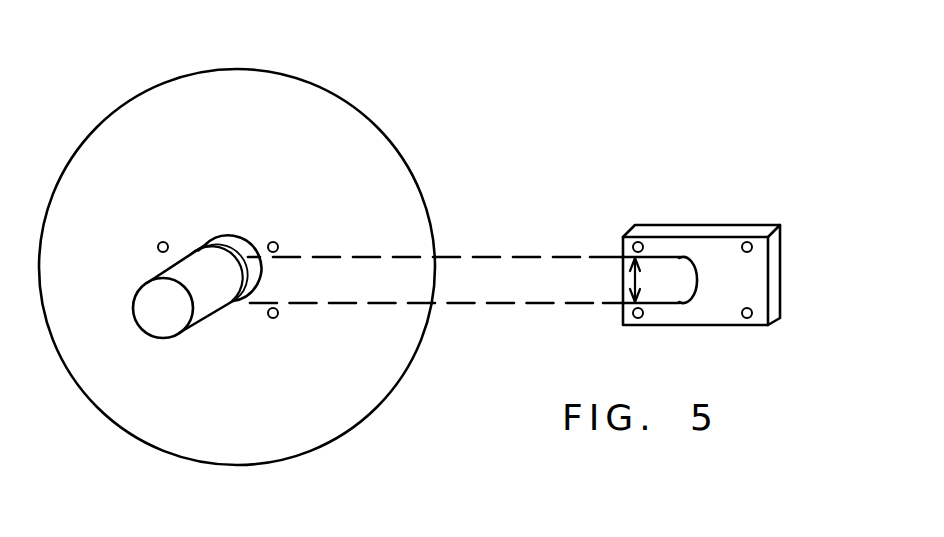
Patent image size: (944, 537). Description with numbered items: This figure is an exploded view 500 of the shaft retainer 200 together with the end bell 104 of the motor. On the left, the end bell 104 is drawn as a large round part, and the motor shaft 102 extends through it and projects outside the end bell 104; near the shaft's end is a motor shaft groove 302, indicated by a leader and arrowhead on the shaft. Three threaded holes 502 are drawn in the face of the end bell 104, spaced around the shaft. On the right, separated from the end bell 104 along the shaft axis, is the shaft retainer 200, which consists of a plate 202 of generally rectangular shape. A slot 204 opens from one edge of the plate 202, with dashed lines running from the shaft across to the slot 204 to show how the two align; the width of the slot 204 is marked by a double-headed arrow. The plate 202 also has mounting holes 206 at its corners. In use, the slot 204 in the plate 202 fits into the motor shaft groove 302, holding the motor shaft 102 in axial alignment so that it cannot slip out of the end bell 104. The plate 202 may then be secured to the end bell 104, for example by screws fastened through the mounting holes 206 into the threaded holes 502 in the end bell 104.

The exploded view 500 is at (597, 78).
The end bell 104 is at (324, 444).
The motor shaft 102 is at (157, 313).
The motor shaft groove 302 is at (213, 255).
The threaded holes 502 is at (164, 241).
The shaft retainer 200 is at (743, 270).
The plate 202 is at (780, 295).
The mounting holes 206 is at (750, 244).
The slot 204 is at (633, 280).